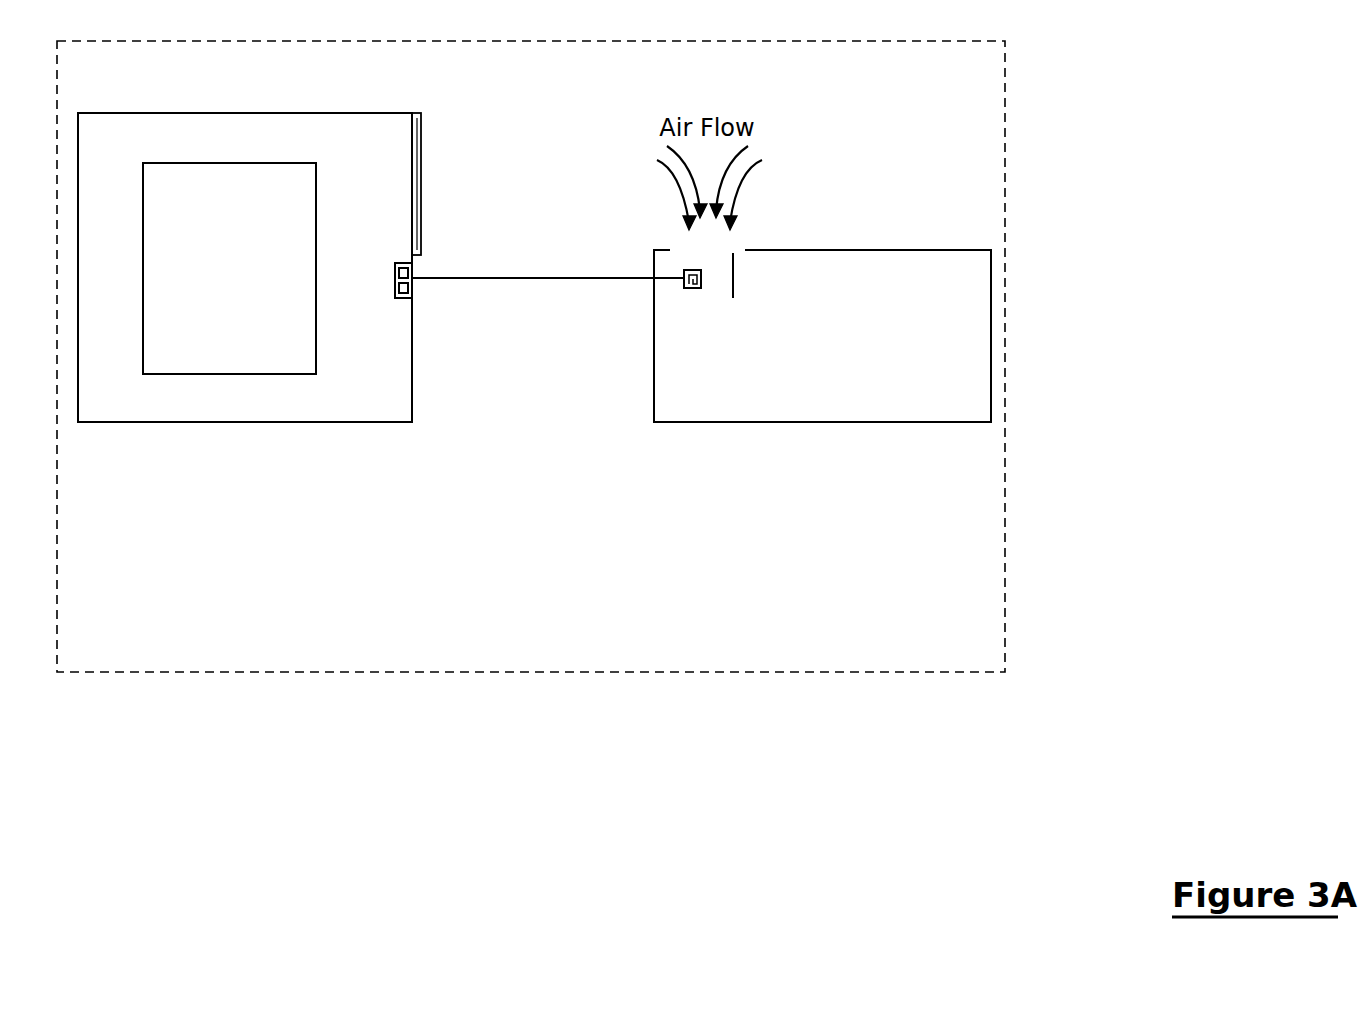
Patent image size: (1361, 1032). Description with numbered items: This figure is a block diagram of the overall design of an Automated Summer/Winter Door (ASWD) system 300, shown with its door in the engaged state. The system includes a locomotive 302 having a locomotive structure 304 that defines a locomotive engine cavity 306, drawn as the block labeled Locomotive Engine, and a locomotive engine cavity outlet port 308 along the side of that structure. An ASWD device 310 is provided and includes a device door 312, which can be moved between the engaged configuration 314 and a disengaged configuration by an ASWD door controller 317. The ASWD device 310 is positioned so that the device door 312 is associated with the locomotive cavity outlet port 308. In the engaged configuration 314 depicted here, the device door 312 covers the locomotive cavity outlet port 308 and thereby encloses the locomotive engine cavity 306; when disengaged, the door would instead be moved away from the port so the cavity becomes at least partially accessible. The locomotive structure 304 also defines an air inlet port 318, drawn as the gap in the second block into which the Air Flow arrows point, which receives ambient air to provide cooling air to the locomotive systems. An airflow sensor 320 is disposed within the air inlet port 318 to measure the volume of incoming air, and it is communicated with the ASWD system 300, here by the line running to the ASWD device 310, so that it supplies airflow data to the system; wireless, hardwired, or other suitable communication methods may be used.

The Automated Summer/Winter Door (ASWD) system 300 is at (1166, 107).
The locomotive 302 is at (531, 416).
The locomotive structure 304 is at (534, 329).
The locomotive engine cavity 306 is at (198, 343).
The locomotive engine cavity outlet port 308 is at (337, 187).
The ASWD device 310 is at (376, 336).
The device door 312 is at (487, 184).
The engaged configuration 314 is at (523, 531).
The ASWD door controller 317 is at (548, 322).
The air inlet port 318 is at (771, 311).
The airflow sensor 320 is at (712, 336).